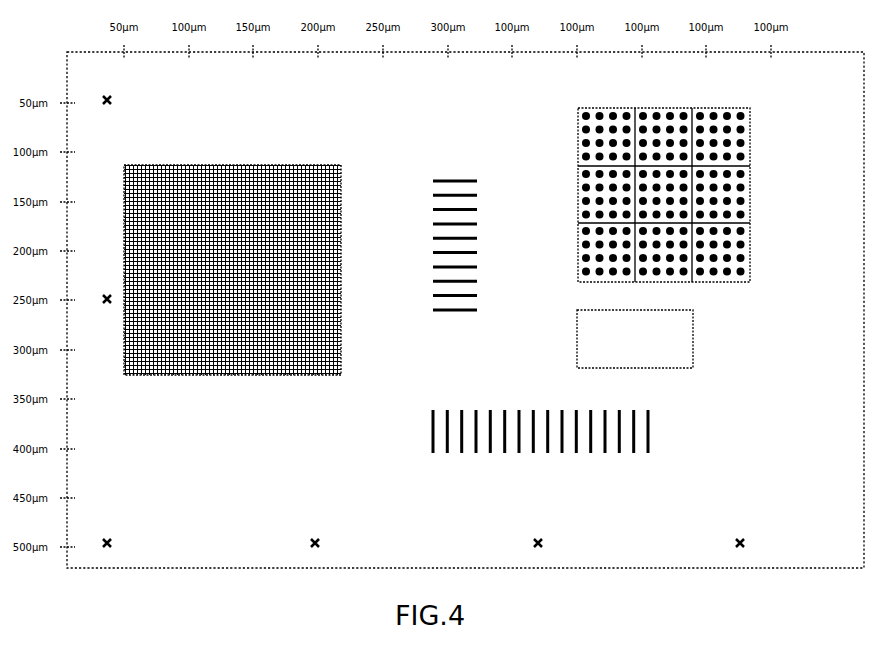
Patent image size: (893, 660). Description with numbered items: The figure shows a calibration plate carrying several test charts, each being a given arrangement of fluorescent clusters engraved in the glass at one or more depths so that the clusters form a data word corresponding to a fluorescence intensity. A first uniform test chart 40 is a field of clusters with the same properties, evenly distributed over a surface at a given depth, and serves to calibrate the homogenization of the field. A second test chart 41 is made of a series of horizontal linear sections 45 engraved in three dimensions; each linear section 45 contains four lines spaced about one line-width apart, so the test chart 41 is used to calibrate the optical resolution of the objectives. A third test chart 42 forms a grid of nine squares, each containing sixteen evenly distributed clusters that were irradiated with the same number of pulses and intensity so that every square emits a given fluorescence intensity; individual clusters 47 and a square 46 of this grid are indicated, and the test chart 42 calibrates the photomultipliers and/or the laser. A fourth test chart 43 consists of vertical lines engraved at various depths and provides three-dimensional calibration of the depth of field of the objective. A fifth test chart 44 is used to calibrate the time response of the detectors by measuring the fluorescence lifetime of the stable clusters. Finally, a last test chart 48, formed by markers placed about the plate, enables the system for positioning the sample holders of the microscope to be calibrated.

The first uniform test chart 40 is at (200, 158).
The second test chart 41 is at (418, 177).
The third test chart 42 is at (658, 184).
The fourth test chart 43 is at (447, 464).
The fifth test chart 44 is at (698, 340).
The horizontal linear section 45 is at (476, 253).
The dot cell 46 is at (745, 193).
The dot element 47 is at (742, 130).
The last test chart 48 is at (113, 99).